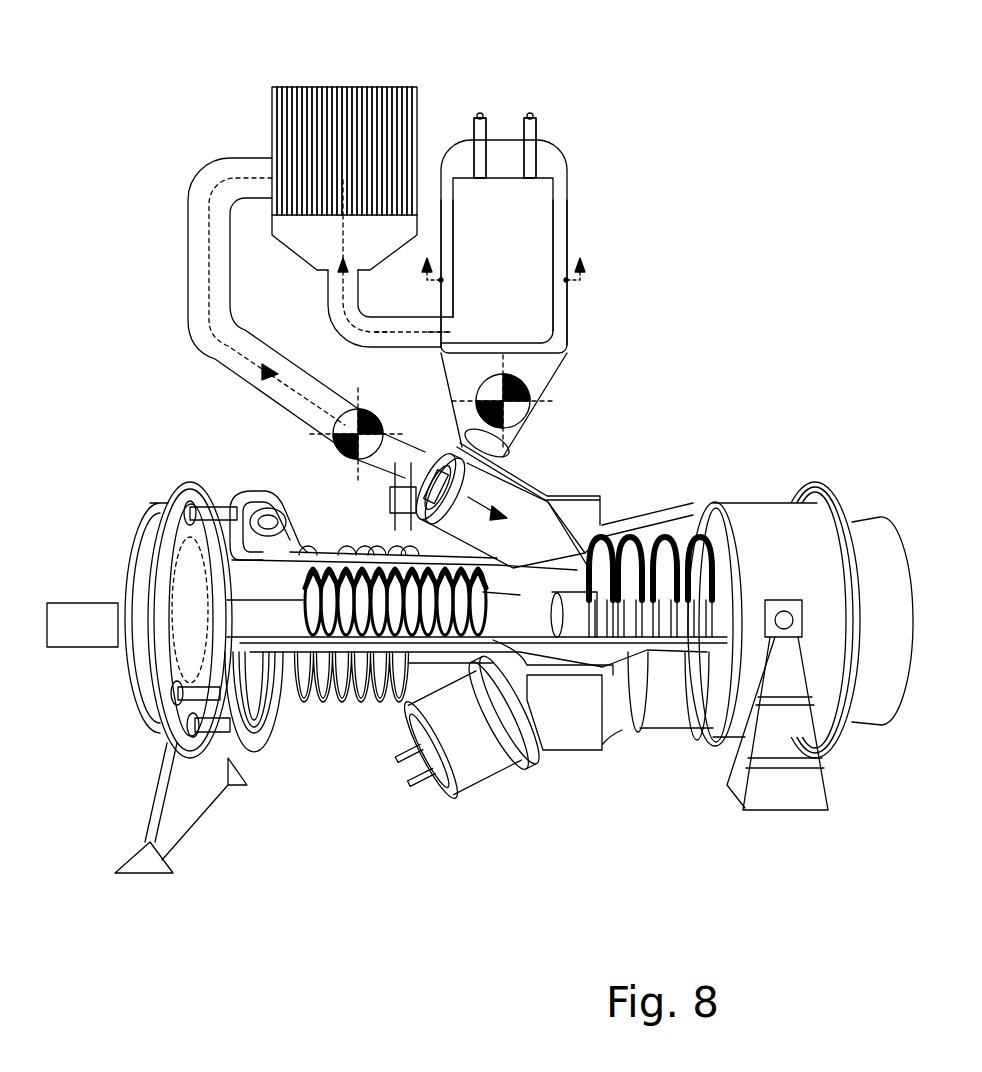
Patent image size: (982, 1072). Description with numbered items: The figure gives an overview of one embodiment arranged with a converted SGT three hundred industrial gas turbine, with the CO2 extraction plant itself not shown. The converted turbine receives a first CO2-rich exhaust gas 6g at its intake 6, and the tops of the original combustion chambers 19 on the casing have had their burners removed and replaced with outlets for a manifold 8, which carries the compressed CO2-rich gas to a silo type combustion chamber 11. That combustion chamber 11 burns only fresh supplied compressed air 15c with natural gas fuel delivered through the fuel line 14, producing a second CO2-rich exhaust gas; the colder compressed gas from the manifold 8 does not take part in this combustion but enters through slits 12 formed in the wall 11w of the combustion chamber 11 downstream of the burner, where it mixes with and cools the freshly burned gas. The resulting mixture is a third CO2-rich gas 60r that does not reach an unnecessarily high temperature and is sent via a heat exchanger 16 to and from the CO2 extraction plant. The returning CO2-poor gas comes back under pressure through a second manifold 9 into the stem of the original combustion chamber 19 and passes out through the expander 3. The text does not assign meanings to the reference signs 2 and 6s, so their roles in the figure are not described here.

The heat exchanger 16 is at (290, 152).
The fuel line 14 is at (480, 115).
The compressed air 15c is at (530, 115).
The silo type combustion chamber 11 is at (513, 197).
The CO2-rich gas 60r is at (412, 331).
The wall of the combustion chamber 11w is at (555, 318).
The slits 12 is at (640, 386).
The manifold 8 is at (505, 405).
The original combustion chamber 19 is at (493, 492).
The second manifold 9 is at (340, 453).
The heating coil 2 is at (363, 607).
The generator system 6s is at (82, 625).
The intake 6 is at (207, 563).
The first CO2-rich exhaust gas 6g is at (265, 628).
The expander 3 is at (660, 657).